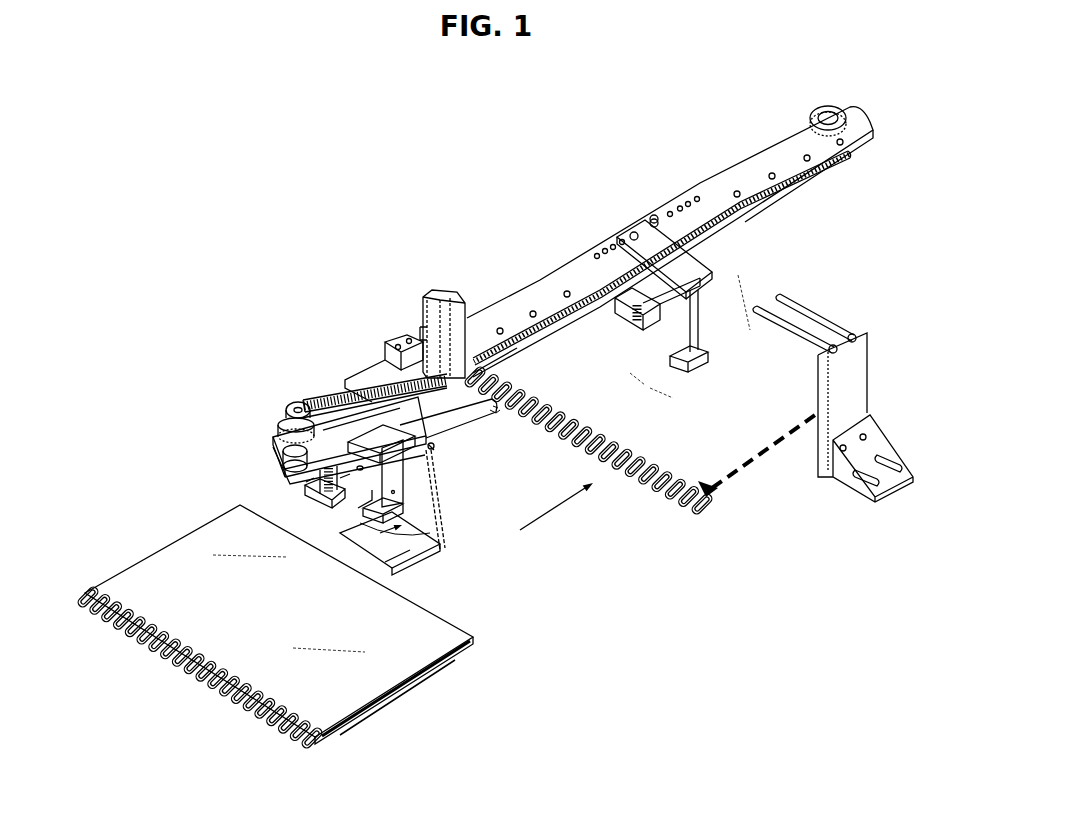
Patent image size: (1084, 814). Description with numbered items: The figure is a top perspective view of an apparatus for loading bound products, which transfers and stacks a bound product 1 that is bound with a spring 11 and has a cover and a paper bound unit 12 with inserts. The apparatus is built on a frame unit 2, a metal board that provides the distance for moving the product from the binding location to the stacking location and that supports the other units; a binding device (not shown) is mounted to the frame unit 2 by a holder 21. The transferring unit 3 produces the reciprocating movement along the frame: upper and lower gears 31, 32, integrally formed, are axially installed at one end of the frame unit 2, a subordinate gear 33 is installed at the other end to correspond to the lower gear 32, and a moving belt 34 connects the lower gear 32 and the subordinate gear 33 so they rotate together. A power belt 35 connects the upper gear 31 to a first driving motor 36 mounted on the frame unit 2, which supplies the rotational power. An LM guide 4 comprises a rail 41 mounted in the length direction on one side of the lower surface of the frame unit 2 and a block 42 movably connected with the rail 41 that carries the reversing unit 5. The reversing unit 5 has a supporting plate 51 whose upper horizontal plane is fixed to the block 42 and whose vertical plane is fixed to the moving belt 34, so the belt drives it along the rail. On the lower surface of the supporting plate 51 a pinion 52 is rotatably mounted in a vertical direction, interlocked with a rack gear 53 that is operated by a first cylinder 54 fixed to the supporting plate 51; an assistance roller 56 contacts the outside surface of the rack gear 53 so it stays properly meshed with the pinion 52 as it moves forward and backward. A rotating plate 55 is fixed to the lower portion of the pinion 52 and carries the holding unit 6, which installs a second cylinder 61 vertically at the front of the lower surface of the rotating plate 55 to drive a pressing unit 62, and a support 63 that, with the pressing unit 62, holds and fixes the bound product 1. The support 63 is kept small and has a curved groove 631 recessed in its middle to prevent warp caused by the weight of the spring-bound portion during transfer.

The bound product 1 is at (284, 628).
The spring 11 is at (258, 716).
The paper bound unit 12 is at (430, 672).
The frame unit 2 is at (690, 290).
The holder 21 is at (842, 324).
The transferring unit 3 is at (372, 387).
The upper gear 31 is at (290, 403).
The lower gear 32 is at (285, 464).
The subordinate gear 33 is at (830, 112).
The moving belt 34 is at (282, 450).
The power belt 35 is at (340, 384).
The first driving motor 36 is at (425, 330).
The LM guide 4 is at (676, 227).
The rail 41 is at (812, 178).
The block 42 is at (387, 425).
The reversing unit 5 is at (345, 496).
The supporting plate 51 is at (426, 452).
The pinion 52 is at (306, 496).
The rack gear 53 is at (330, 504).
The first cylinder 54 is at (492, 411).
The rotating plate 55 is at (406, 478).
The assistance roller 56 is at (358, 510).
The holding unit 6 is at (416, 533).
The second cylinder 61 is at (433, 511).
The pressing unit 62 is at (436, 528).
The support 63 is at (440, 556).
The curved groove 631 is at (396, 576).